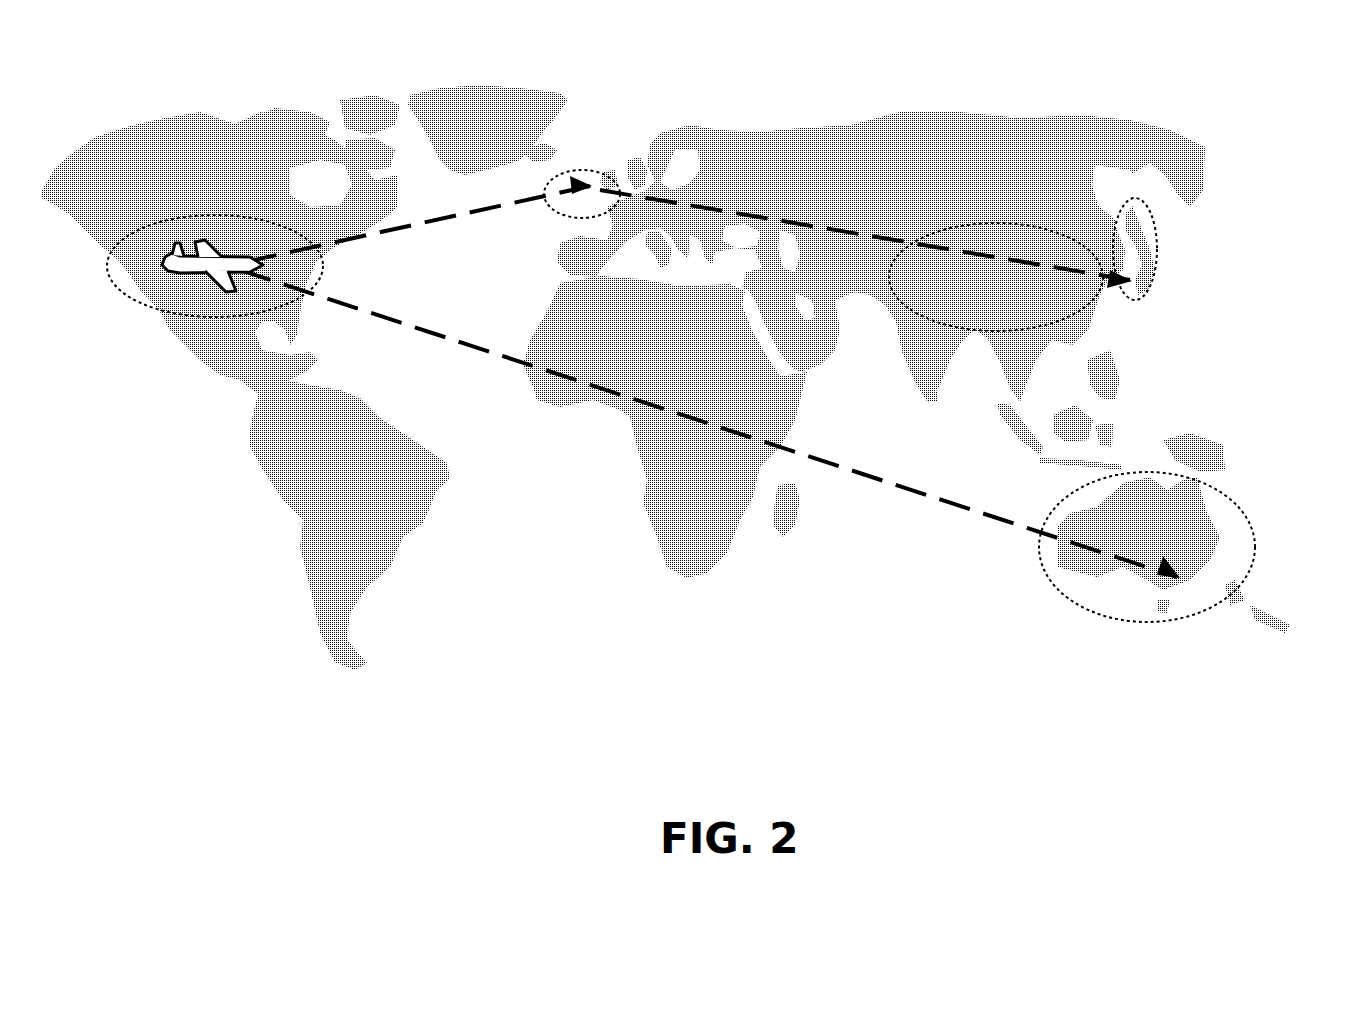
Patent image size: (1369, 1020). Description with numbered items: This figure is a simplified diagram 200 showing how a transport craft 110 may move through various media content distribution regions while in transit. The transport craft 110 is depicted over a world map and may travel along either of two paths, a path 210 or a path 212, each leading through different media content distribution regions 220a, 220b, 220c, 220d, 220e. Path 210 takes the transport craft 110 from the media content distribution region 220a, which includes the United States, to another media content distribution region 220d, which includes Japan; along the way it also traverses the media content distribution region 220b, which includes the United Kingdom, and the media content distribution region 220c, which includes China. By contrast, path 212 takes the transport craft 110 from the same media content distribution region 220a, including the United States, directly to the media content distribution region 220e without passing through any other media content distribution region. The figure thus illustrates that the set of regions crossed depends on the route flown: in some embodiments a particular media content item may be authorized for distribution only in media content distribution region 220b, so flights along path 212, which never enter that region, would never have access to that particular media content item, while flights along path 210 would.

The transport craft 110 is at (195, 258).
The flight route map 200 is at (1292, 180).
The path 210 is at (467, 213).
The path 212 is at (663, 407).
The media content distribution region 220a is at (157, 307).
The media content distribution region 220b is at (600, 171).
The media content distribution region 220c is at (1017, 226).
The media content distribution region 220d is at (1157, 247).
The media content distribution region 220e is at (1043, 562).